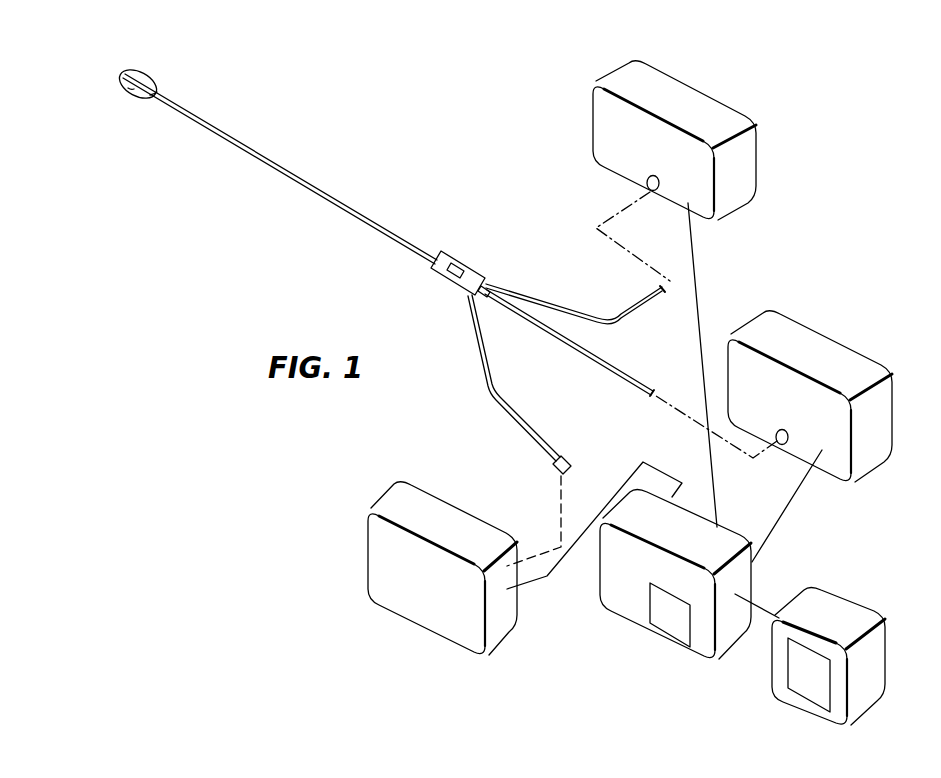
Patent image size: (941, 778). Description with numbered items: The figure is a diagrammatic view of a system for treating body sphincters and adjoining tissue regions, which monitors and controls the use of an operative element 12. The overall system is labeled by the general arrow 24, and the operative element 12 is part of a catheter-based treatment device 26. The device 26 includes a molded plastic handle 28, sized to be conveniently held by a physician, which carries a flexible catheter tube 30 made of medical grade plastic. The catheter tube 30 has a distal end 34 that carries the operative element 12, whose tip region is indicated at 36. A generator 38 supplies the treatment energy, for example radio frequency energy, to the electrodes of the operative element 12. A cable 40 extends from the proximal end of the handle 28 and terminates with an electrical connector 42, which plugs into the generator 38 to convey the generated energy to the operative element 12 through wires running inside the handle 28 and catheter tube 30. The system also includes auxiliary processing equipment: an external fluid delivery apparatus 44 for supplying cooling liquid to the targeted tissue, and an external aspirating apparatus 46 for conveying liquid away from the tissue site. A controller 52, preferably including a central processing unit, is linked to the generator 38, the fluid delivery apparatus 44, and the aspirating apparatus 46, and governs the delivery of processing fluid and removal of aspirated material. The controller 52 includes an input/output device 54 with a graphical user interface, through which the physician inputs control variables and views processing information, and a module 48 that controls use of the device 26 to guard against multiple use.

The operative element 12 is at (125, 64).
The monitoring system 24 is at (422, 101).
The catheter-based treatment device 26 is at (392, 207).
The handle 28 is at (465, 258).
The catheter tube 30 is at (245, 133).
The distal end 34 is at (152, 96).
The sensor 36 is at (128, 88).
The generator 38 is at (430, 503).
The cable 40 is at (506, 404).
The electrical connector 42 is at (574, 455).
The external fluid delivery apparatus 44 is at (828, 352).
The external aspirating apparatus 46 is at (700, 101).
The module 48 is at (673, 627).
The controller 52 is at (632, 607).
The input/output (I/O) device 54 is at (795, 678).